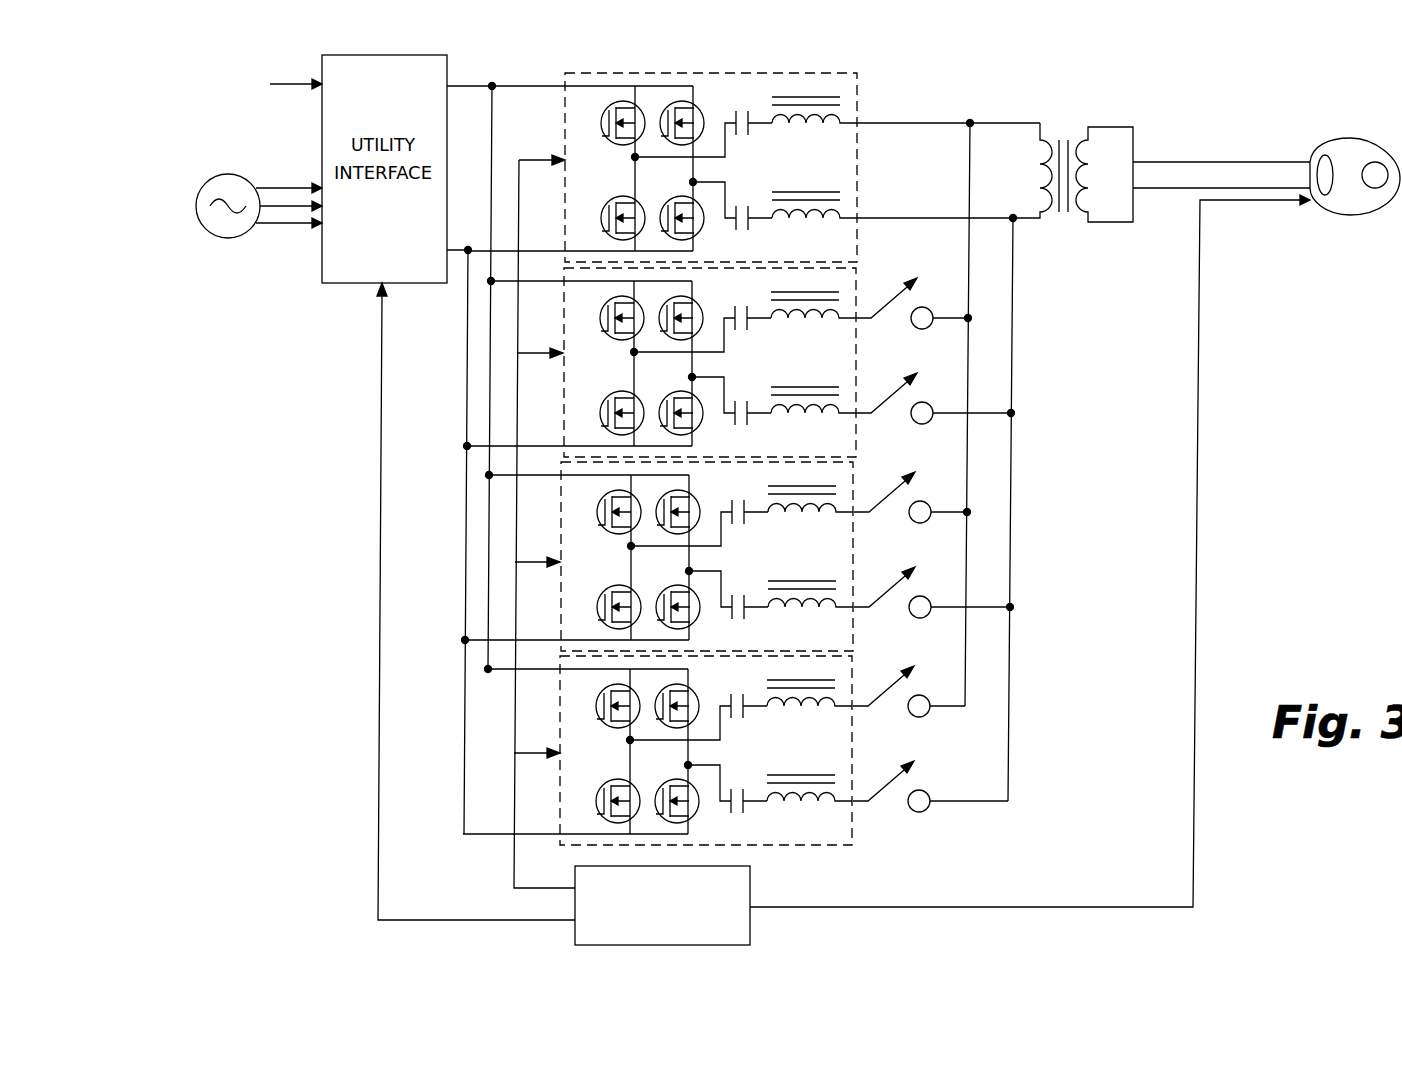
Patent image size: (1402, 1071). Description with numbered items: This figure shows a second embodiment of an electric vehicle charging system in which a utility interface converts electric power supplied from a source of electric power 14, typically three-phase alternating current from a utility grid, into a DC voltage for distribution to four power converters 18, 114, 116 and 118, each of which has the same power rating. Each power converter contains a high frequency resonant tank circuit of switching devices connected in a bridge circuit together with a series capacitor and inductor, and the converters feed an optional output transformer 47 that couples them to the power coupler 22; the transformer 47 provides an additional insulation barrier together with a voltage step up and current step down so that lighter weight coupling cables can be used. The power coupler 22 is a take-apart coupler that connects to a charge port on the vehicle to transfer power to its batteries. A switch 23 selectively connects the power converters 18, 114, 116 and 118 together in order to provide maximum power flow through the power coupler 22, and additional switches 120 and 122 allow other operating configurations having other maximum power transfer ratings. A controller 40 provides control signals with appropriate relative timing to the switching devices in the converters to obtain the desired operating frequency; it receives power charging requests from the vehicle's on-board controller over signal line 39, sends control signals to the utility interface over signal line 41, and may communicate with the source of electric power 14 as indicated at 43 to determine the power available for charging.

The source of electric power 14 is at (242, 231).
The communication with the source of electric power 43 is at (288, 82).
The first power converter 18 is at (857, 105).
The power converter 114 is at (873, 268).
The power converter 116 is at (855, 565).
The power converter 118 is at (854, 815).
The switch 23 is at (933, 286).
The additional switch 120 is at (921, 487).
The additional switch 122 is at (910, 688).
The output transformer 47 is at (1068, 126).
The power coupler 22 is at (1350, 138).
The signal line 39 is at (1202, 478).
The controller 40 is at (750, 893).
The signal line 41 is at (379, 823).